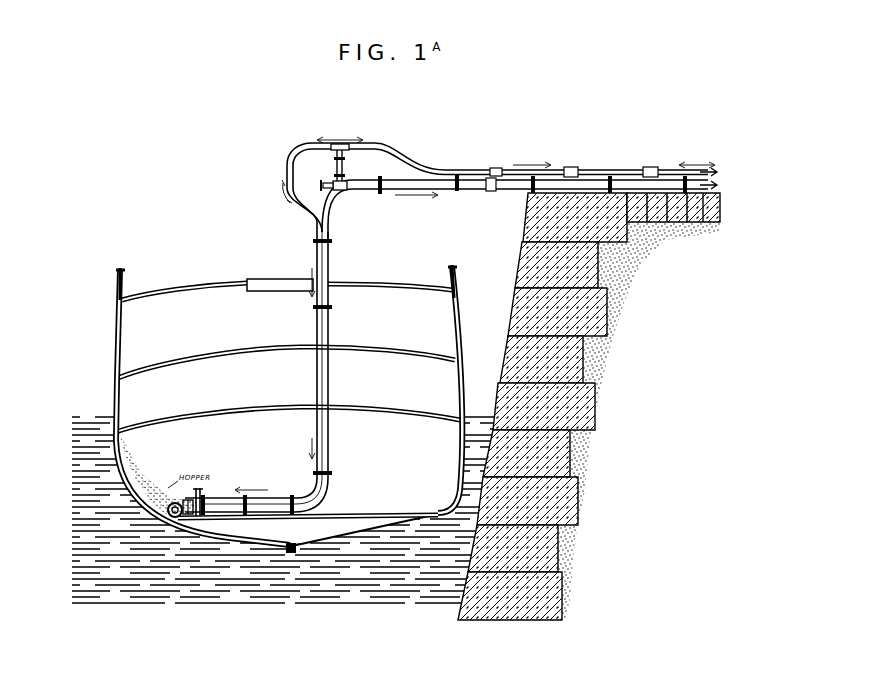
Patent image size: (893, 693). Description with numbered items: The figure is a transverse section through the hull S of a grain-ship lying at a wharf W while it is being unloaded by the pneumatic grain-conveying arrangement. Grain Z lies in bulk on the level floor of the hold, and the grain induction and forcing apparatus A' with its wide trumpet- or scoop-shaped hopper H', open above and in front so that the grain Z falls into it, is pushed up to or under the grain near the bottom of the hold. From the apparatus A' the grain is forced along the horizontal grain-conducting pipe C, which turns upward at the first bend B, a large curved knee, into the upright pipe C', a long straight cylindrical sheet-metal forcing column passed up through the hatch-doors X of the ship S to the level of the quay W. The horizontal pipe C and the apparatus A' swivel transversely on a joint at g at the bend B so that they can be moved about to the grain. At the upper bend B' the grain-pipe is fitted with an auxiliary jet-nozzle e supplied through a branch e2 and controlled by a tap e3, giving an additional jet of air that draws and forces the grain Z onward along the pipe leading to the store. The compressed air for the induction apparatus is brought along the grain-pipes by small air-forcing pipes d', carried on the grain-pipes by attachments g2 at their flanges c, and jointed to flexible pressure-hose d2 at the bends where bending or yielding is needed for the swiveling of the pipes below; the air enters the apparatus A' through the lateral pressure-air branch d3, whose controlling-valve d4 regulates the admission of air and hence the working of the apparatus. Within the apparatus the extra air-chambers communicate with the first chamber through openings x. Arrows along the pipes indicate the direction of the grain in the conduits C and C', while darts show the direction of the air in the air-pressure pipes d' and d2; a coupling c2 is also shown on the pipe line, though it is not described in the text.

The hull of grain-ship S is at (289, 409).
The hatch-doors X is at (280, 286).
The openings x is at (308, 520).
The grain Z is at (159, 473).
The wharf W is at (589, 406).
The upright grain pipe C' is at (331, 355).
The horizontal grain-conducting pipe C is at (534, 191).
The flanges c is at (465, 348).
The pipe coupling c2 is at (489, 186).
The first bend B is at (259, 497).
The upper bend B' is at (337, 210).
The air-forcing pipe d' is at (377, 327).
The pressure-hose d2 is at (499, 317).
The pressure-air branch d3 is at (200, 497).
The controlling-valve d4 is at (214, 498).
The auxiliary jet-nozzle e is at (364, 173).
The branch e2 is at (346, 173).
The controlling tap e3 is at (326, 178).
The swivel joint g is at (332, 486).
The attachments g2 is at (381, 204).
The hopper H' is at (168, 504).
The grain induction and forcing apparatus A' is at (186, 500).